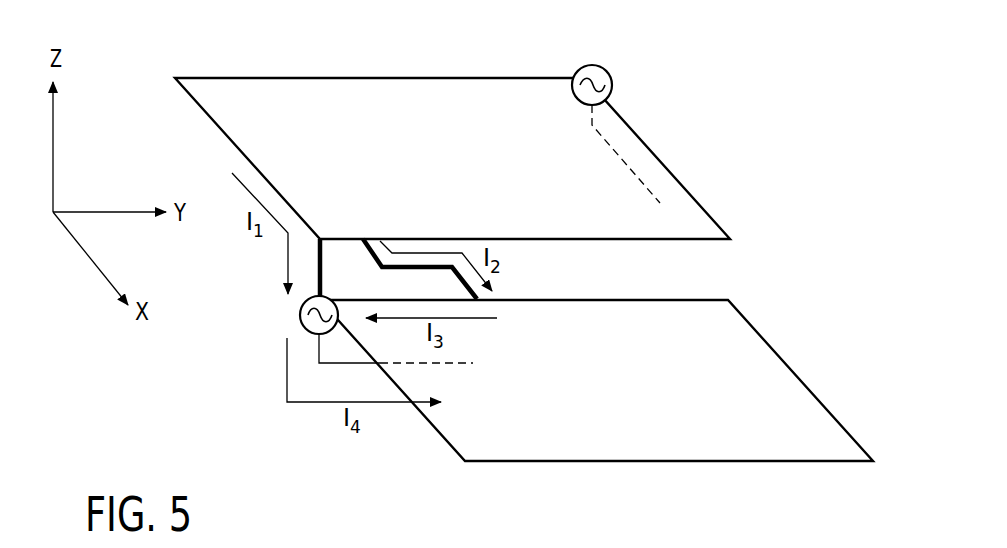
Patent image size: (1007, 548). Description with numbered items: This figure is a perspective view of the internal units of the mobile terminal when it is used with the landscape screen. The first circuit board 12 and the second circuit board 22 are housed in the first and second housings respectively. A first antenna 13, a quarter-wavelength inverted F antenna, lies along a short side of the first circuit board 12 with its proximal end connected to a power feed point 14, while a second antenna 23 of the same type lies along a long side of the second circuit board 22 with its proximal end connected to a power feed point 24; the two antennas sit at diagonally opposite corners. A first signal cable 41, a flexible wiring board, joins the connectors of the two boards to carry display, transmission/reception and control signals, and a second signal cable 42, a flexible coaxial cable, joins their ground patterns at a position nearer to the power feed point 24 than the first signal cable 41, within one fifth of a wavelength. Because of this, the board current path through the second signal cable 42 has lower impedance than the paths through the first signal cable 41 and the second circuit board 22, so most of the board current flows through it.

The first circuit board 12 is at (362, 90).
The first antenna 13 is at (620, 157).
The power feed point 14 is at (594, 65).
The second circuit board 22 is at (625, 462).
The second antenna 23 is at (460, 365).
The power feed point 24 is at (300, 315).
The first signal cable 41 is at (428, 268).
The second signal cable 42 is at (325, 270).